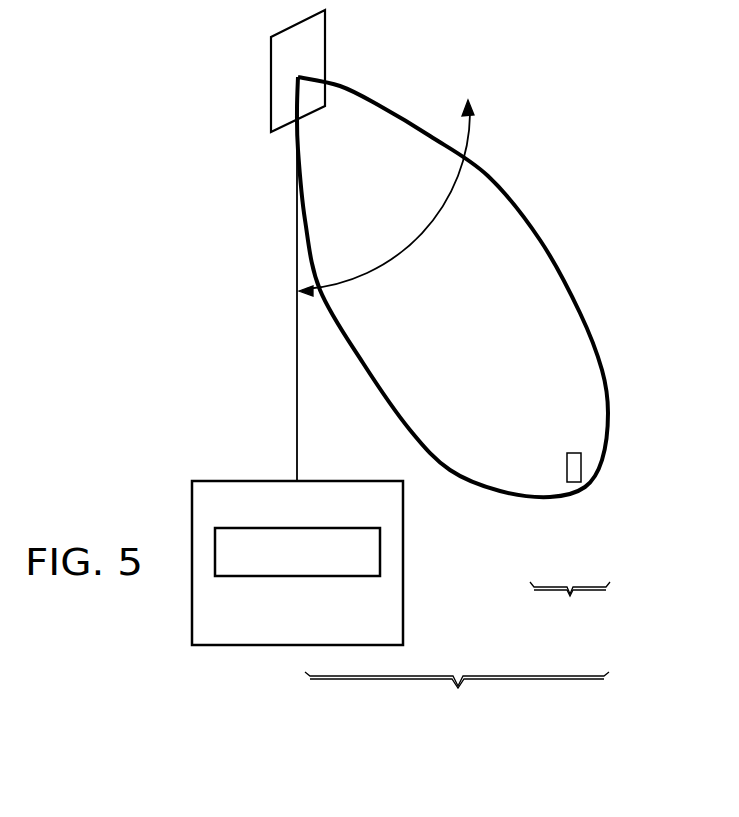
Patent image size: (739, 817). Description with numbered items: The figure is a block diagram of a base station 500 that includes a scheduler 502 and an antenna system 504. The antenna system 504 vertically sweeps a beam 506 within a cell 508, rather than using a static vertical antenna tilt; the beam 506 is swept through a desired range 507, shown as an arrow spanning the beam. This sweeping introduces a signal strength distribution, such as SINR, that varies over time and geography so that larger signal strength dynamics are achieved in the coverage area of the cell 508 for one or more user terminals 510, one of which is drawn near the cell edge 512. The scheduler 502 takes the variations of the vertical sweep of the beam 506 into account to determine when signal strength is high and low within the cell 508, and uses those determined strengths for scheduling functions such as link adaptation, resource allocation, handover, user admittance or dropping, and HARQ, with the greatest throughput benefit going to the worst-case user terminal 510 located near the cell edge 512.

The base station 500 is at (250, 645).
The scheduler 502 is at (260, 577).
The antenna system 504 is at (272, 85).
The beam 506 is at (488, 175).
The desired range 507 is at (422, 227).
The cell 508 is at (457, 696).
The user terminal 510 is at (572, 453).
The cell edge 512 is at (570, 608).